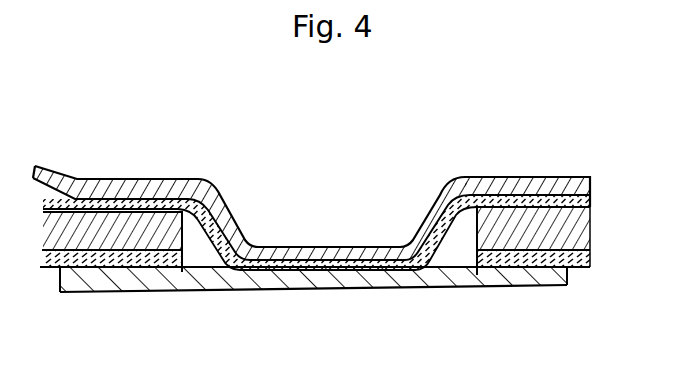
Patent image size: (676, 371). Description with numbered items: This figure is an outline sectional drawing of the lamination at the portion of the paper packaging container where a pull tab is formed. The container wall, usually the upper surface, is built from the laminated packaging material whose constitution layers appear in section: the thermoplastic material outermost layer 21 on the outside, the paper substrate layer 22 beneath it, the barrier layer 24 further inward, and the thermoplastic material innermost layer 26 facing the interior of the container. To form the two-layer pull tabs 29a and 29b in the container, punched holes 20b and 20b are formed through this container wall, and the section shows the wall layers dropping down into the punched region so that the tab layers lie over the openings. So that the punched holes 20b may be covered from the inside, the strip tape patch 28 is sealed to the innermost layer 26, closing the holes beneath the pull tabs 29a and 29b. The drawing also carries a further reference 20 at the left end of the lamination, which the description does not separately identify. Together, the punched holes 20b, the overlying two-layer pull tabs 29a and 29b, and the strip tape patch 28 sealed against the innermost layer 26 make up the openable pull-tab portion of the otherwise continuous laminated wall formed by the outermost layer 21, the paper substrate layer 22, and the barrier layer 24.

The pressure sensor assembly 20 is at (42, 267).
The punched holes 20b is at (222, 236).
The thermoplastic material outermost layer 21 is at (583, 183).
The paper substrate layer 22 is at (583, 217).
The barrier layer 24 is at (583, 255).
The thermoplastic material innermost layer 26 is at (582, 268).
The strip tape patch 28 is at (425, 280).
The pull tab 29a is at (207, 188).
The pull tab 29b is at (342, 247).